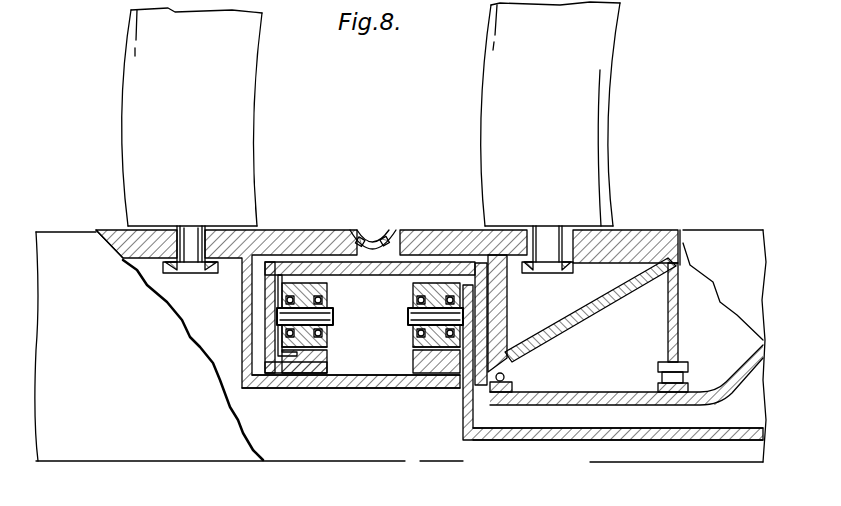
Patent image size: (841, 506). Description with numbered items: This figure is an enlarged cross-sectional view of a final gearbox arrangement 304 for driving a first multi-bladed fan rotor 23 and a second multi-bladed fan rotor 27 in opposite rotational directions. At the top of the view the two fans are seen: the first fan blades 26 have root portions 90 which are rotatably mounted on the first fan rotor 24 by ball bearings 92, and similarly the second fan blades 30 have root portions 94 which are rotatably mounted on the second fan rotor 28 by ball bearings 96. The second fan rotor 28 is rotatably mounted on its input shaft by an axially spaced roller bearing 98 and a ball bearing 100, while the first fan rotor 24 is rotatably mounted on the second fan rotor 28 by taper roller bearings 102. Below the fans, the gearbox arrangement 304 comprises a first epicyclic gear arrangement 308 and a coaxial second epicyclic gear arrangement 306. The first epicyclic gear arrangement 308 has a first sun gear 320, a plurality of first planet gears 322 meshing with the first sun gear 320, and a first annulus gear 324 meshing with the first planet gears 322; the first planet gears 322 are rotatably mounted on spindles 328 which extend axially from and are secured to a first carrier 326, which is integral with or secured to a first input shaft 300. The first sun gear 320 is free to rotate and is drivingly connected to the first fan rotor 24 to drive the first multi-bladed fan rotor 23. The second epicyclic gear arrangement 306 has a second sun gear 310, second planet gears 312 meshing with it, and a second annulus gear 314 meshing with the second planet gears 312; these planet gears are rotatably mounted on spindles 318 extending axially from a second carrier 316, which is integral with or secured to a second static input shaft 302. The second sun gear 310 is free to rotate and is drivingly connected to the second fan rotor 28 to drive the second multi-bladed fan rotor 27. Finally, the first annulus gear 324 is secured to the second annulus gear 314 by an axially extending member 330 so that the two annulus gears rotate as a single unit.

The first multi-bladed fan rotor 23 is at (110, 108).
The first fan blades 26 is at (146, 32).
The first fan rotor 24 is at (128, 250).
The second multi-bladed fan rotor 27 is at (468, 126).
The second fan blades 30 is at (497, 70).
The second fan rotor 28 is at (497, 256).
The ball bearings 92 is at (165, 265).
The root portions 90 is at (186, 255).
The root portions 94 is at (562, 230).
The ball bearings 96 is at (628, 252).
The roller bearing 98 is at (666, 378).
The ball bearing 100 is at (506, 378).
The taper roller bearings 102 is at (366, 245).
The first input shaft 300 is at (726, 440).
The second static input shaft 302 is at (688, 406).
The gearbox arrangement 304 is at (180, 380).
The second epicyclic gear arrangement 306 is at (328, 366).
The first epicyclic gear arrangement 308 is at (408, 366).
The second sun gear 310 is at (268, 386).
The second planet gears 312 is at (303, 283).
The second annulus gear 314 is at (288, 283).
The second carrier 316 is at (278, 288).
The spindles 318 is at (272, 320).
The first sun gear 320 is at (436, 380).
The first planet gears 322 is at (423, 258).
The first annulus gear 324 is at (447, 256).
The first carrier 326 is at (485, 306).
The spindles 328 is at (472, 323).
The axially extending member 330 is at (330, 310).